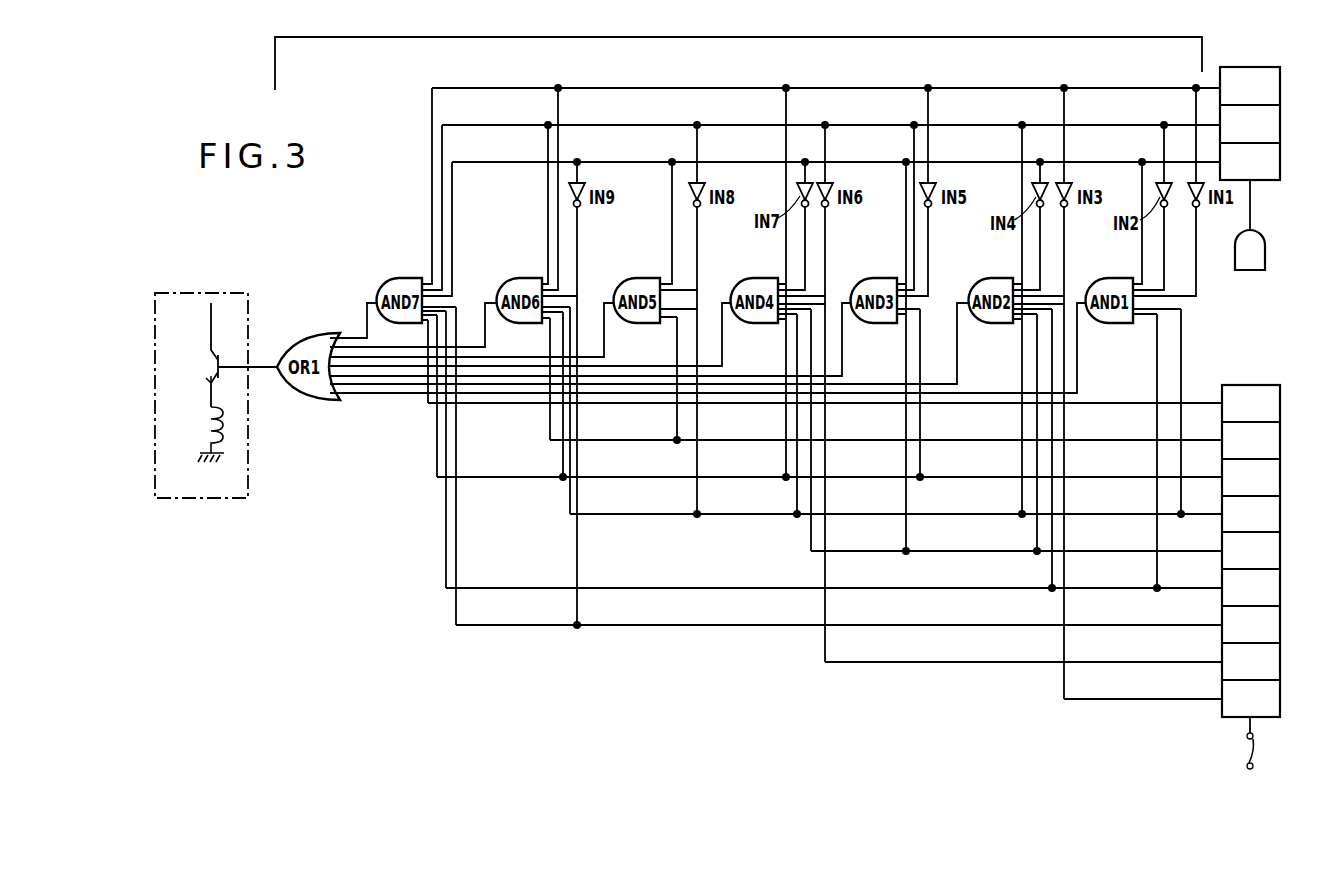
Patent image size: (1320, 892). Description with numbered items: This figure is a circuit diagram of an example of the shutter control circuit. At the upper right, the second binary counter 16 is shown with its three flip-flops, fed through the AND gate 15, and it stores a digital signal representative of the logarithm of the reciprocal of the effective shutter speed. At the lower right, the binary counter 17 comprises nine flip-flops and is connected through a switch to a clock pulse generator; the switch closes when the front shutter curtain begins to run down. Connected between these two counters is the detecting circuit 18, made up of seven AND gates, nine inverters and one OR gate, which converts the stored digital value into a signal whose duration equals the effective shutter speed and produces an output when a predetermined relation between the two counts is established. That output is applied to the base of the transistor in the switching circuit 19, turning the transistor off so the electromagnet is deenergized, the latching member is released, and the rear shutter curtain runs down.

The AND gate 15 is at (1250, 225).
The second binary counter 16 is at (1281, 127).
The binary counter 17 is at (1282, 547).
The detecting circuit 18 is at (275, 38).
The switching circuit 19 is at (222, 293).